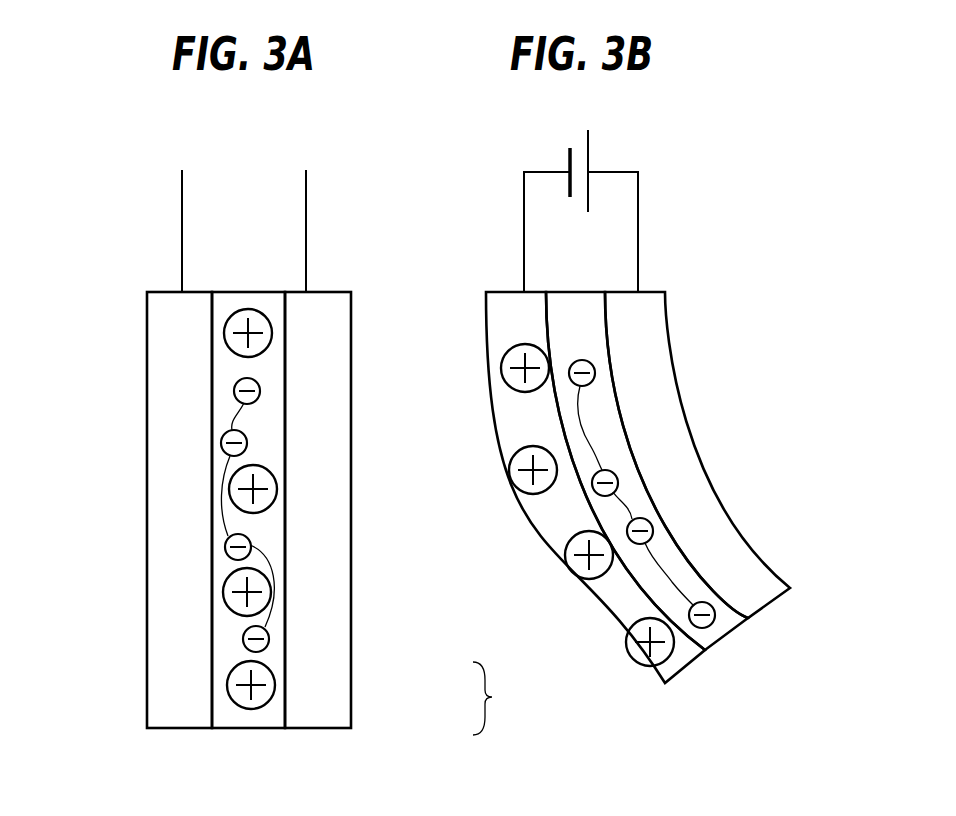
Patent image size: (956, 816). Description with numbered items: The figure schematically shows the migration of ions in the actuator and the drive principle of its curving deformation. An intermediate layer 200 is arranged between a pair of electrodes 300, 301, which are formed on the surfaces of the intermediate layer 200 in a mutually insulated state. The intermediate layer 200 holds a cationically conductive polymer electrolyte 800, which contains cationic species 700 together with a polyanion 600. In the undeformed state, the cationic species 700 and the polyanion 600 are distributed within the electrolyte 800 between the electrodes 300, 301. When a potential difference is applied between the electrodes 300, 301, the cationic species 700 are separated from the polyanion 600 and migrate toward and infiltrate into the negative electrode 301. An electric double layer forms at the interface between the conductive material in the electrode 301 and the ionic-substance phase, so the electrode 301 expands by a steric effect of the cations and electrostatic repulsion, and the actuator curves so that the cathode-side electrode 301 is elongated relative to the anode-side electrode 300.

In FIG. 3A, the negative electrode 301 is at (162, 390).
In FIG. 3B, the negative electrode 301 is at (538, 339).
In FIG. 3A, the intermediate layer 200 is at (220, 572).
In FIG. 3B, the intermediate layer 200 is at (587, 422).
In FIG. 3A, the electrode 300 is at (298, 518).
In FIG. 3B, the electrode 300 is at (692, 480).
In FIG. 3A, the polyanion 600 is at (268, 645).
In FIG. 3B, the polyanion 600 is at (592, 483).
In FIG. 3A, the cationic species 700 is at (273, 695).
In FIG. 3B, the cationic species 700 is at (655, 665).
In FIG. 3A, the cationically conductive polymer electrolyte 800 is at (512, 698).